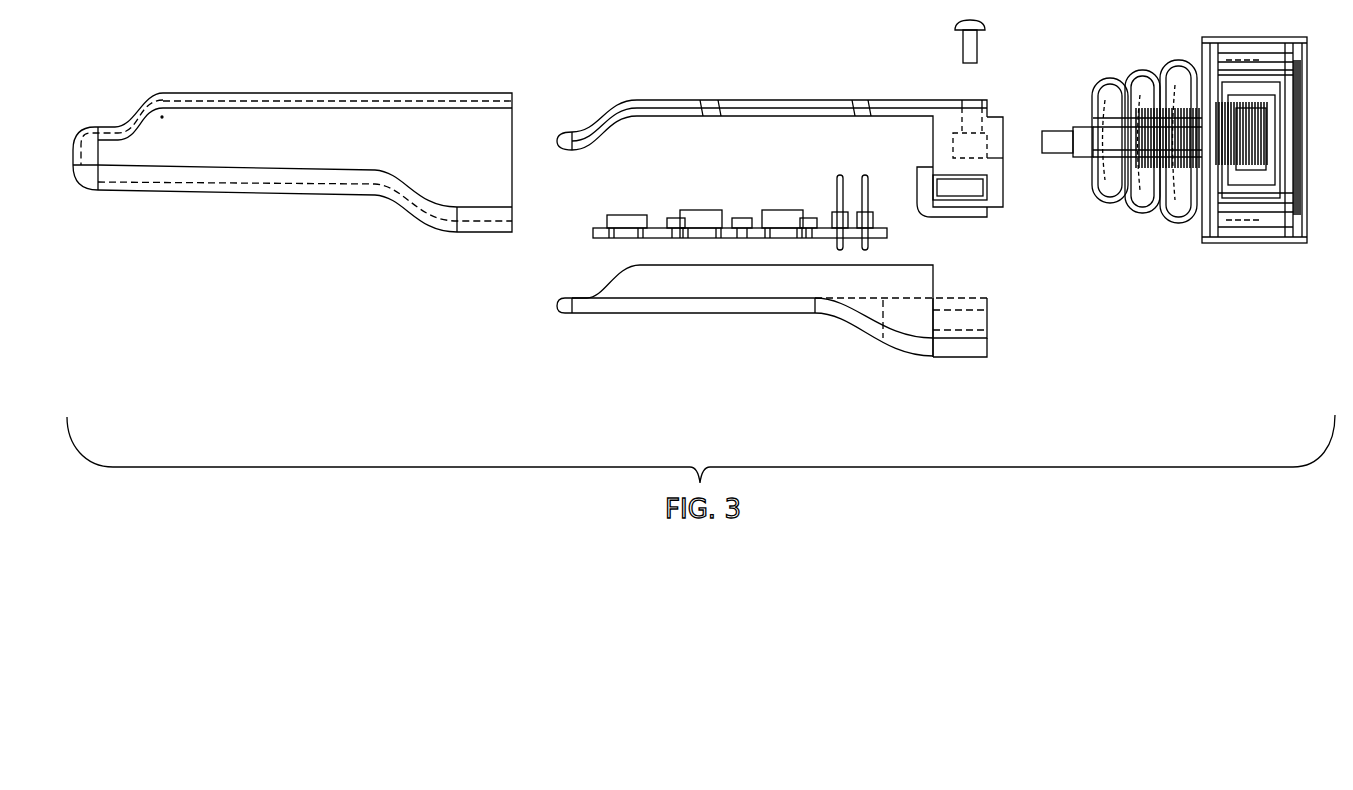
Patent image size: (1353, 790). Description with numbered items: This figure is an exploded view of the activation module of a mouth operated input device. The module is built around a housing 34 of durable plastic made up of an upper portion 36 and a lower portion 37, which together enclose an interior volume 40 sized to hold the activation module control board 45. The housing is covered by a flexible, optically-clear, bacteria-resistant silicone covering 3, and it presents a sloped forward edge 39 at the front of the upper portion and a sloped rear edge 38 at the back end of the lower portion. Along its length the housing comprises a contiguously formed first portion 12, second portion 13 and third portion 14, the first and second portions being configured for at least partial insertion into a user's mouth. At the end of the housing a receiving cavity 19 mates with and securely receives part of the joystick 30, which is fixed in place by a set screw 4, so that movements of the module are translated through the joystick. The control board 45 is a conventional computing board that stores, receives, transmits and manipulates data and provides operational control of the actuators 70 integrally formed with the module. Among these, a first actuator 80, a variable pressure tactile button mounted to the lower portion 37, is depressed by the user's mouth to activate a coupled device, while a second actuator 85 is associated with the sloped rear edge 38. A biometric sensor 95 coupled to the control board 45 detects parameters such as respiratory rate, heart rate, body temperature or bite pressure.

The covering 3 is at (245, 195).
The set screw 4 is at (962, 45).
The first portion 12 is at (622, 327).
The second portion 13 is at (714, 327).
The third portion 14 is at (952, 375).
The receiving cavity 19 is at (999, 138).
The joystick 30 is at (1247, 235).
The housing 34 is at (1010, 378).
The upper portion 36 is at (999, 220).
The lower portion 37 is at (566, 340).
The sloped rear edge 38 is at (871, 334).
The sloped forward edge 39 is at (591, 115).
The interior volume 40 is at (915, 227).
The activation module control board 45 is at (593, 233).
The actuators 70 is at (778, 218).
The first actuator 80 is at (615, 220).
The second actuator 85 is at (712, 227).
The biometric sensor 95 is at (783, 218).